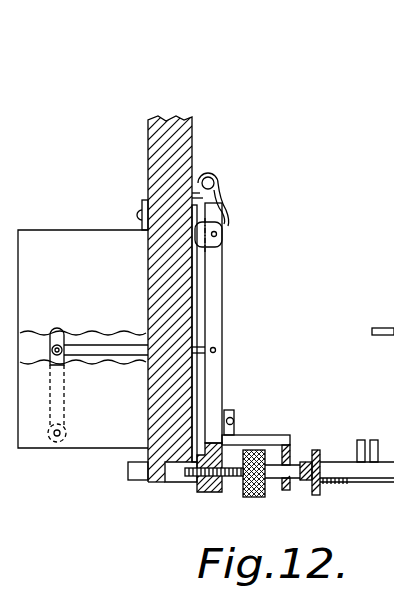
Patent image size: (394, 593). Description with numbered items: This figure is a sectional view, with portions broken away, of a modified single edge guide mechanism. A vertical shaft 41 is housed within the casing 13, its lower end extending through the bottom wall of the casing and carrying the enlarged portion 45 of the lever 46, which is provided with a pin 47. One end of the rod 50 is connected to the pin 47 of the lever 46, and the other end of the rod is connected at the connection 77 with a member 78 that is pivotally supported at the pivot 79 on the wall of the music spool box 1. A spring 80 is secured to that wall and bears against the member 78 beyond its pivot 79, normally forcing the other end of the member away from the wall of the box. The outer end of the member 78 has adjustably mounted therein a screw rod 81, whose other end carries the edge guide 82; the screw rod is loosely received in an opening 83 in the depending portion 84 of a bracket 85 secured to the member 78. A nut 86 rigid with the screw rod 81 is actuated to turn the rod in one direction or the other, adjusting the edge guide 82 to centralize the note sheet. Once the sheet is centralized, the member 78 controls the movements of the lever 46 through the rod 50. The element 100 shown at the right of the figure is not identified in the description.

The wall 1 is at (157, 163).
The housing 13 is at (52, 216).
The lever 41 is at (54, 444).
The pin 45 is at (66, 432).
The pivot 46 is at (51, 350).
The arm 47 is at (58, 330).
The rod 50 is at (113, 343).
The pin 77 is at (217, 350).
The bar 78 is at (220, 294).
The block 79 is at (219, 234).
The spring clip 80 is at (224, 186).
The block 81 is at (218, 484).
The flange 82 is at (319, 454).
The screw 83 is at (287, 470).
The nut 84 is at (288, 446).
The bracket 85 is at (246, 440).
The knurled knob 86 is at (252, 497).
The rod 100 is at (352, 486).